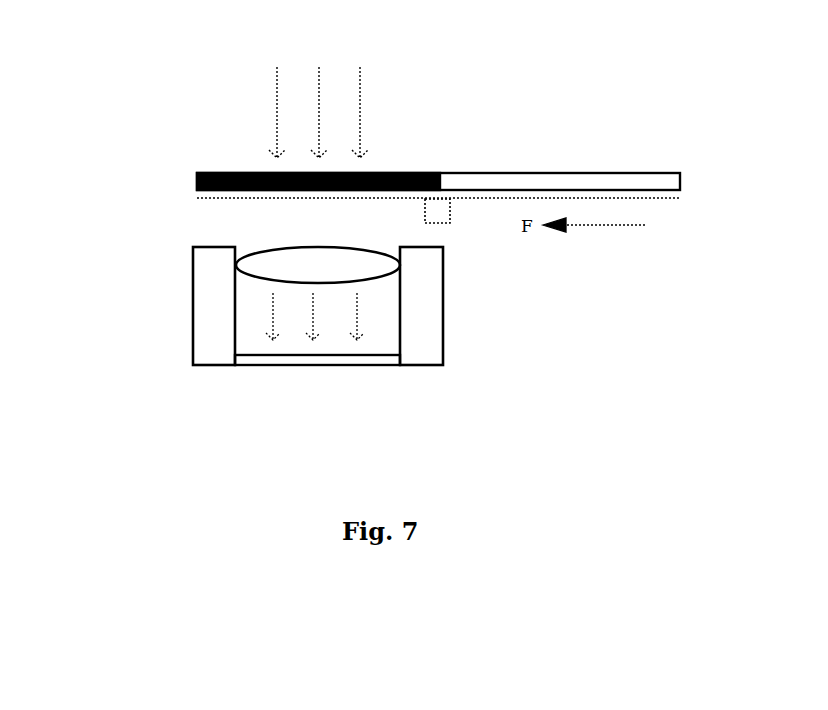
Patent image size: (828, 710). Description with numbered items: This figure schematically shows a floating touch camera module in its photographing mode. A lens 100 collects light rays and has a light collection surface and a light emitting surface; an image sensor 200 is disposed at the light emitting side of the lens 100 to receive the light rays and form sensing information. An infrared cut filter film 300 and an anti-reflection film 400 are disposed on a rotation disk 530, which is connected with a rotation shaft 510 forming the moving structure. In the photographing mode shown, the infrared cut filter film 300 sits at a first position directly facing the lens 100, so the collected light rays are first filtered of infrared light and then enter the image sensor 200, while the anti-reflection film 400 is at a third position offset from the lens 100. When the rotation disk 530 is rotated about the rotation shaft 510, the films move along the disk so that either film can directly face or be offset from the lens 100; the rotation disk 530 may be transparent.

The lens 100 is at (287, 262).
The image sensor 200 is at (317, 360).
The infrared cut filter film 300 is at (235, 175).
The anti-reflection film 400 is at (488, 173).
The rotation shaft 510 is at (438, 210).
The rotation disk 530 is at (200, 197).